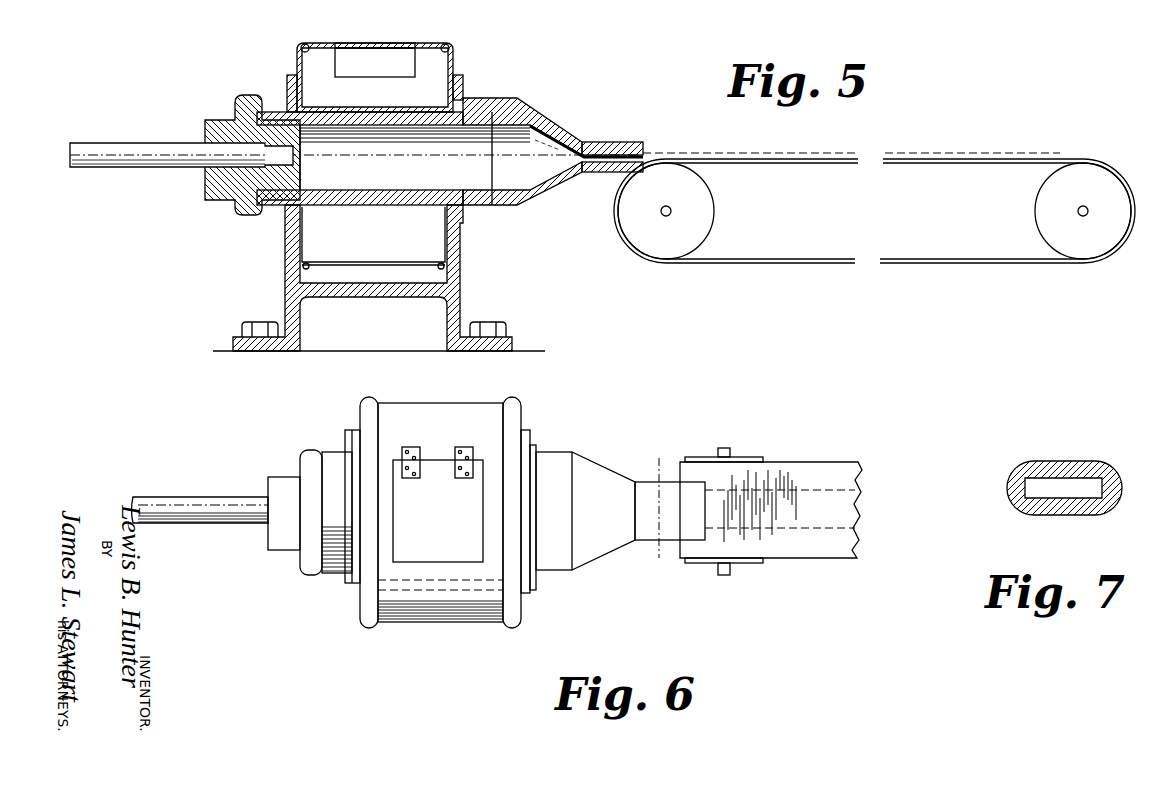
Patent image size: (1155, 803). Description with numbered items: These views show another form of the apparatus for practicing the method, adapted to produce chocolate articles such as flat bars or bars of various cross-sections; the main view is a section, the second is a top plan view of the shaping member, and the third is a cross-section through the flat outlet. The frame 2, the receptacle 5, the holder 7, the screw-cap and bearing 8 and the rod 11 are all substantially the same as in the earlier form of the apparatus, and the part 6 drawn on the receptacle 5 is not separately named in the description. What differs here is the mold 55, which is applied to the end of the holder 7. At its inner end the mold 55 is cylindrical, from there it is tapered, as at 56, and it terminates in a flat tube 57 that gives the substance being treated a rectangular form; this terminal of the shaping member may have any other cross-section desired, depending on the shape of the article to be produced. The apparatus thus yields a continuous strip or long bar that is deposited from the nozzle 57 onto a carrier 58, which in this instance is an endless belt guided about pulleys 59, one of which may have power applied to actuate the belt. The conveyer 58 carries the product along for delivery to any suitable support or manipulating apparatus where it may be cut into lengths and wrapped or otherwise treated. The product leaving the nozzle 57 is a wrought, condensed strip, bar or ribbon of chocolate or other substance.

In FIG. 5, the frame 2 is at (287, 258).
In FIG. 6, the frame 2 is at (525, 432).
In FIG. 5, the receptacle 5 is at (381, 265).
In FIG. 6, the receptacle 5 is at (443, 610).
In FIG. 5, the magnet / field structure 6 is at (378, 45).
In FIG. 6, the magnet / field structure 6 is at (438, 504).
In FIG. 5, the holder 7 is at (388, 172).
In FIG. 6, the holder 7 is at (660, 508).
In FIG. 5, the screw-cap and bearing 8 is at (243, 200).
In FIG. 6, the screw-cap and bearing 8 is at (305, 473).
In FIG. 5, the rod 11 is at (148, 167).
In FIG. 6, the rod 11 is at (202, 505).
In FIG. 5, the mold 55 is at (492, 100).
In FIG. 6, the mold 55 is at (557, 563).
In FIG. 5, the tapered portion 56 is at (560, 136).
In FIG. 6, the tapered portion 56 is at (600, 475).
In FIG. 5, the flat tube 57 is at (640, 126).
In FIG. 6, the flat tube 57 is at (650, 532).
In FIG. 7, the flat tube 57 is at (1065, 462).
In FIG. 5, the carrier 58 is at (773, 262).
In FIG. 6, the carrier 58 is at (830, 470).
In FIG. 5, the pulleys 59 is at (660, 245).
In FIG. 6, the pulleys 59 is at (790, 440).